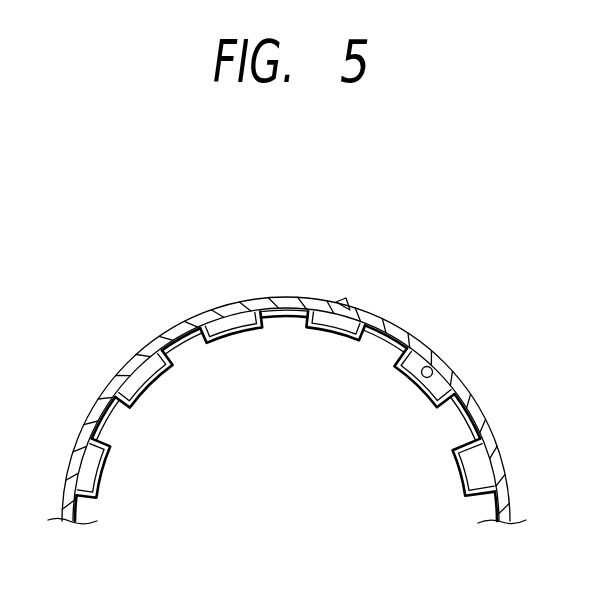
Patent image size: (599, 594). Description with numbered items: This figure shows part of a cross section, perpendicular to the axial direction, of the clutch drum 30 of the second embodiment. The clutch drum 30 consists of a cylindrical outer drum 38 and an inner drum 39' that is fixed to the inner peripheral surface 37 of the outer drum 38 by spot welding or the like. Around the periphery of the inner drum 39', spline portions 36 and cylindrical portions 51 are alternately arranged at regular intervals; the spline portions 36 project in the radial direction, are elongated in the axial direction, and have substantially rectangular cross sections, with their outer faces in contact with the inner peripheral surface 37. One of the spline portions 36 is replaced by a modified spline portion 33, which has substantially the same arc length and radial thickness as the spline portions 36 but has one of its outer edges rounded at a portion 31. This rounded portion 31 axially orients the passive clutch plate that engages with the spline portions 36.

The clutch drum 30 is at (226, 235).
The outer drum 38 is at (300, 280).
The inner drum 39' is at (361, 268).
The inner peripheral surface 37 is at (432, 370).
The spline portions 36 is at (198, 343).
The cylindrical portions 51 is at (238, 346).
The modified spline portion 33 is at (283, 322).
The rounded portion 31 is at (303, 331).